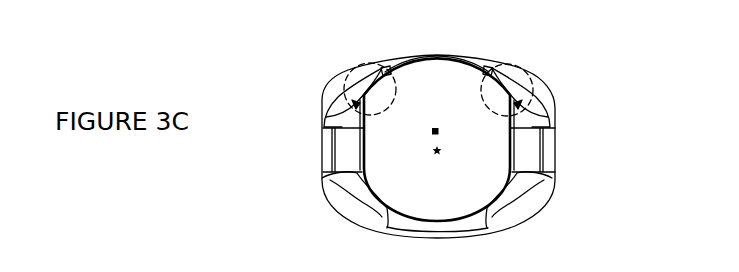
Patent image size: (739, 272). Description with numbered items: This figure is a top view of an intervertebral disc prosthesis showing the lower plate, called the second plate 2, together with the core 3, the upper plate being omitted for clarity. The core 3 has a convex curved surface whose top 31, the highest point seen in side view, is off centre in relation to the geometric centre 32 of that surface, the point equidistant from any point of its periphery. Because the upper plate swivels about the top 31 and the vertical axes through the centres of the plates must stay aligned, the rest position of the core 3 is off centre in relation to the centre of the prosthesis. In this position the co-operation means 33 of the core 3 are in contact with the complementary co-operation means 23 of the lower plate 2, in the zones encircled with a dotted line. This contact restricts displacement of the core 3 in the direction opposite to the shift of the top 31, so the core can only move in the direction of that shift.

The second plate 2 is at (552, 98).
The core 3 is at (482, 62).
The co-operation means 23 is at (540, 122).
The top of the curved surface 31 is at (436, 147).
The geometric centre of the curved surface 32 is at (436, 129).
The co-operation means 33 is at (530, 152).